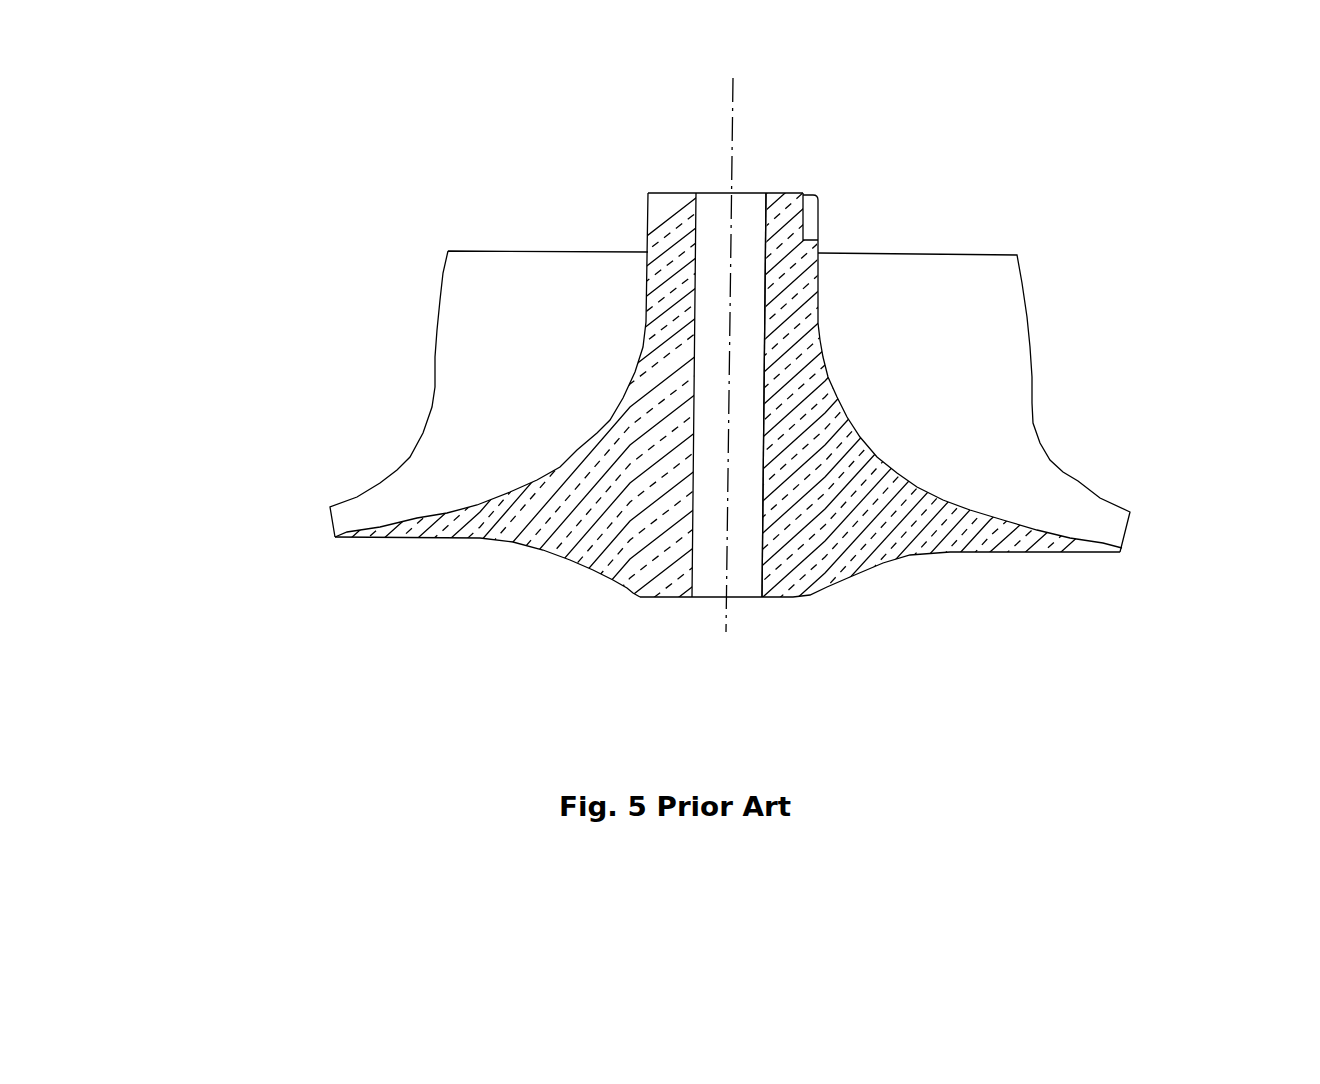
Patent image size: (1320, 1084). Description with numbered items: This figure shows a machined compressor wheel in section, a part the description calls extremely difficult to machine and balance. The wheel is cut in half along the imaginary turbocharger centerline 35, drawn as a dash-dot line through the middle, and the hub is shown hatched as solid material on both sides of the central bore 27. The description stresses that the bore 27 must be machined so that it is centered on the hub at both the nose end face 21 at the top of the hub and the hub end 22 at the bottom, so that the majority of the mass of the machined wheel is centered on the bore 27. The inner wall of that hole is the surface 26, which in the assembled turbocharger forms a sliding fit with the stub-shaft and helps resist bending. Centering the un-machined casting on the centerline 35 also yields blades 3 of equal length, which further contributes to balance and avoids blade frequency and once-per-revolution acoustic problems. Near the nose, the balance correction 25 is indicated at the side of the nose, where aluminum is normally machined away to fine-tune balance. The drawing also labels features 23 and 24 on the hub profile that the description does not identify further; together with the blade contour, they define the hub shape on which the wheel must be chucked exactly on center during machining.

The blade 3 is at (403, 462).
The nose end face 21 is at (770, 193).
The hub end 22 is at (792, 600).
The hub back face 23 is at (518, 543).
The hub nose end face 24 is at (648, 214).
The balance correction 25 is at (815, 215).
The surface of the hole 26 is at (757, 401).
The bore 27 is at (748, 470).
The turbocharger centerline 35 is at (723, 103).